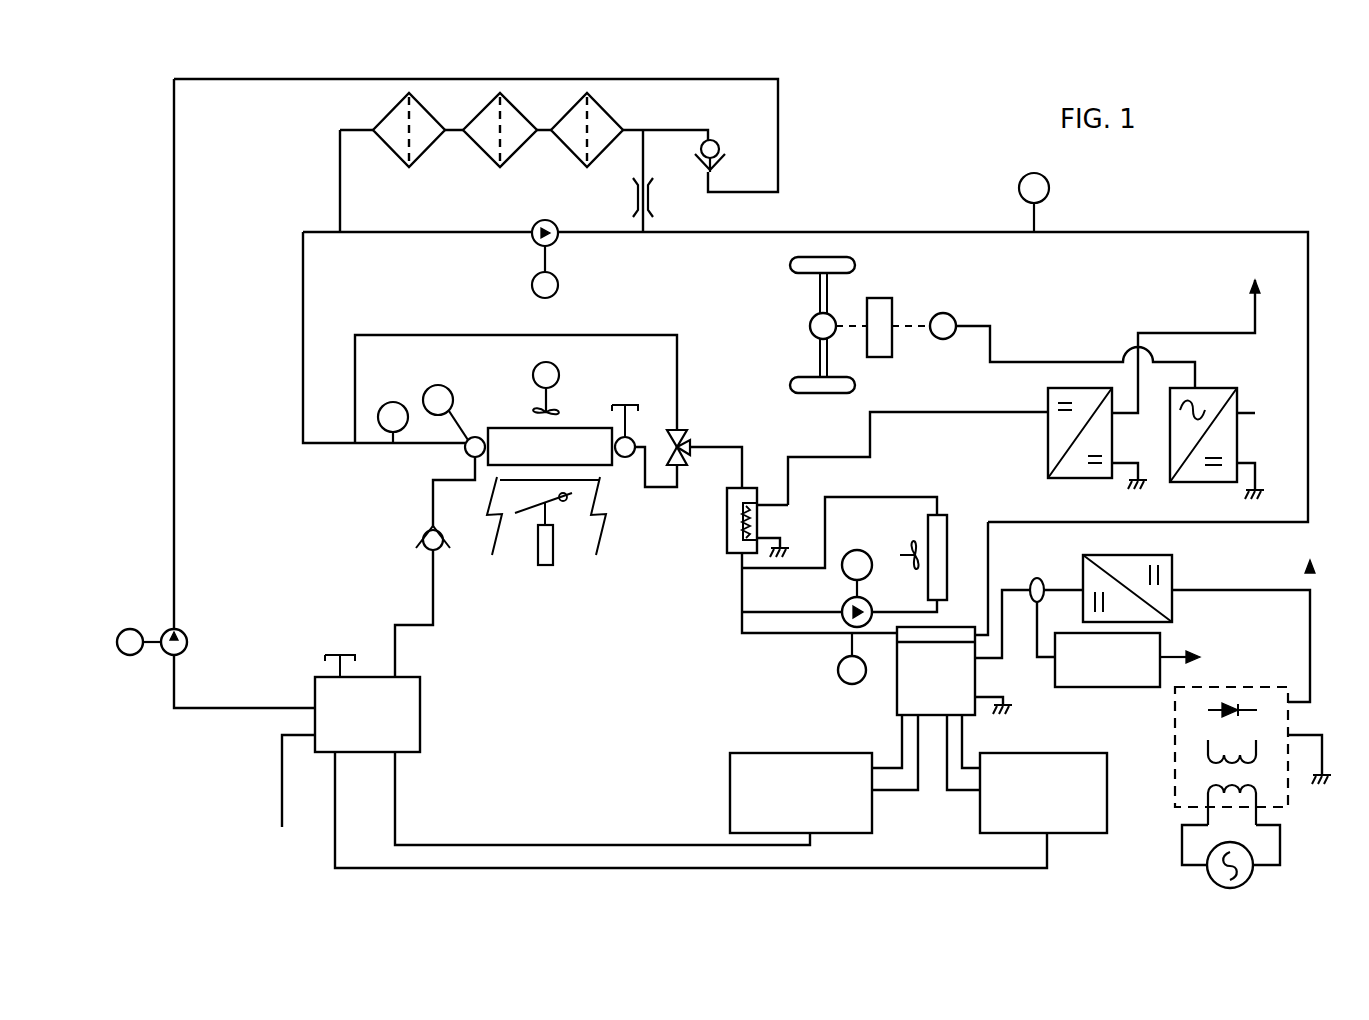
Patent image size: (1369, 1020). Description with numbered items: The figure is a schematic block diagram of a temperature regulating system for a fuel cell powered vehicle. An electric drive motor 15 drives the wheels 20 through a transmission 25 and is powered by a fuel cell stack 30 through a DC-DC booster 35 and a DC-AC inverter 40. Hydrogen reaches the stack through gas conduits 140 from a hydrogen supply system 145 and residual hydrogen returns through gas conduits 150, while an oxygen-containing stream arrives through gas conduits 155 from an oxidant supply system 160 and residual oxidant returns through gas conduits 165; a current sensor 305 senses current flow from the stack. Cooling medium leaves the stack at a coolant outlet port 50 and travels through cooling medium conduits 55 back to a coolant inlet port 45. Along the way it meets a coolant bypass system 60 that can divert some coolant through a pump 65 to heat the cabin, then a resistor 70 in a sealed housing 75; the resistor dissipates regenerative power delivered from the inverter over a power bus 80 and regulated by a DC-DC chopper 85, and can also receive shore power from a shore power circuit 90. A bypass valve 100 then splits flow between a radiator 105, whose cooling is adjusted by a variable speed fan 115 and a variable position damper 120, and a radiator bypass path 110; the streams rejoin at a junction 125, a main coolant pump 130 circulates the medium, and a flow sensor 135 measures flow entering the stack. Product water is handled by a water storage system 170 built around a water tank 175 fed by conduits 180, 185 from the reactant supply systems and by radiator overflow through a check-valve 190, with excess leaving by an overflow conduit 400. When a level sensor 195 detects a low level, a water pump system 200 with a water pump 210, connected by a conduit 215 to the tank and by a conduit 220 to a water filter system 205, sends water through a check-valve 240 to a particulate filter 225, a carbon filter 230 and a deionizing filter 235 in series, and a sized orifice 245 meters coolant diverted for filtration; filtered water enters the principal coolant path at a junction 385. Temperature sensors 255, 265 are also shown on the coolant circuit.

The electric drive motor 15 is at (947, 313).
The wheels 20 is at (848, 263).
The transmission 25 is at (878, 360).
The fuel cell stack 30 is at (897, 710).
The DC-DC booster 35 is at (1172, 582).
The DC-AC inverter 40 is at (1228, 430).
The coolant inlet port 45 is at (980, 632).
The coolant outlet port 50 is at (883, 640).
The cooling medium conduits 55 is at (600, 232).
The coolant bypass system 60 is at (938, 516).
The pump 65 is at (857, 551).
The resistor 70 is at (760, 522).
The sealed housing 75 is at (727, 542).
The power bus 80 is at (1252, 312).
The DC-DC chopper 85 is at (1068, 478).
The shore power circuit 90 is at (1290, 817).
The bypass valve 100 is at (680, 430).
The radiator 105 is at (562, 458).
The radiator bypass path 110 is at (623, 335).
The variable speed fan 115 is at (560, 392).
The variable position damper 120 is at (552, 555).
The junction 125 is at (345, 443).
The main coolant pump 130 is at (528, 262).
The flow sensor 135 is at (1050, 188).
The gas conduits 140 is at (900, 740).
The hydrogen supply system 145 is at (730, 765).
The gas conduits 150 is at (893, 790).
The gas conduits 155 is at (962, 740).
The oxidant supply system 160 is at (1095, 832).
The gas conduits 165 is at (962, 795).
The water storage system 170 is at (466, 745).
The water tank 175 is at (407, 745).
The conduit 180 is at (555, 845).
The conduit 185 is at (805, 878).
The check-valve 190 is at (443, 552).
The level sensor 195 is at (452, 388).
The water pump system 200 is at (168, 436).
The water filter system 205 is at (470, 197).
The water pump 210 is at (157, 656).
The conduit 215 is at (192, 708).
The conduit 220 is at (176, 268).
The particulate filter 225 is at (605, 125).
The carbon filter 230 is at (485, 118).
The deionizing filter 235 is at (380, 125).
The check-valve 240 is at (720, 148).
The sized orifice 245 is at (632, 210).
The temperature sensor 255 is at (838, 674).
The temperature sensor 265 is at (384, 402).
The current sensor 305 is at (1095, 687).
The junction 385 is at (340, 232).
The overflow conduit 400 is at (282, 785).